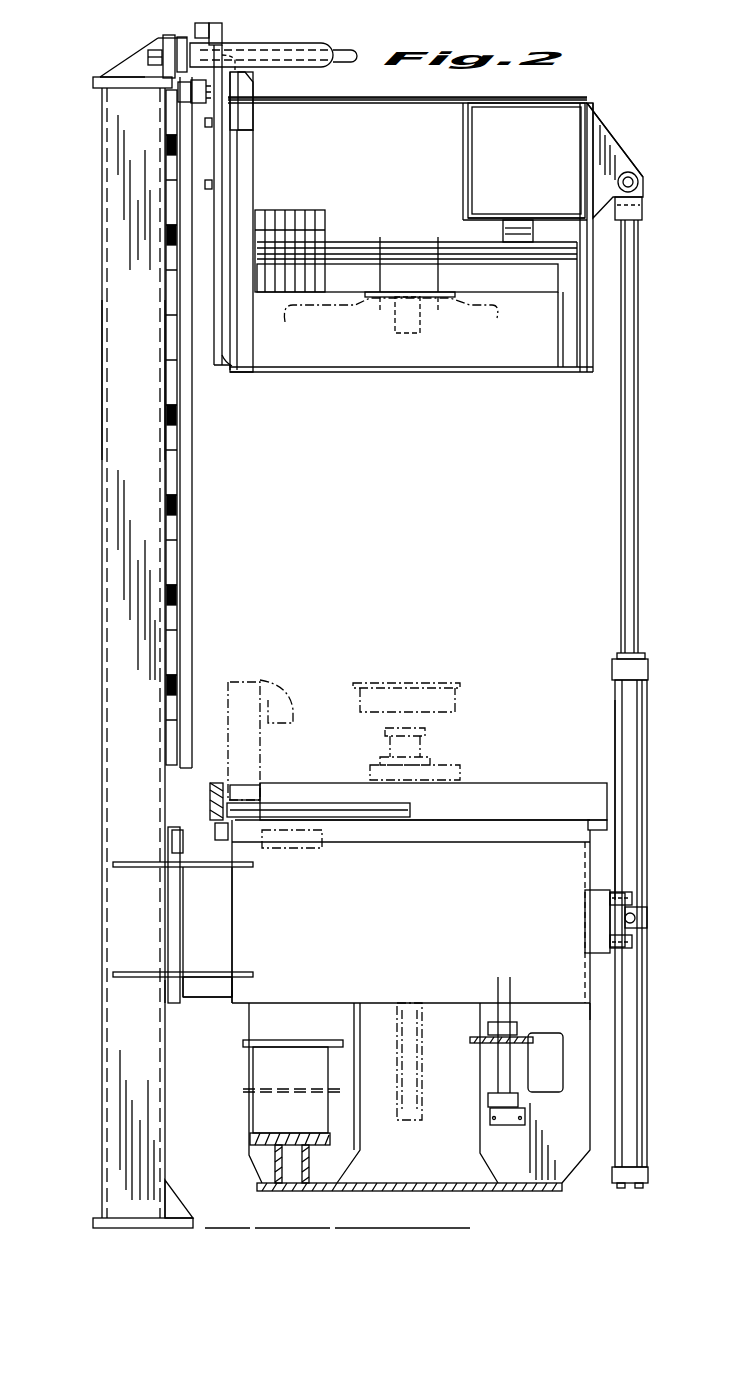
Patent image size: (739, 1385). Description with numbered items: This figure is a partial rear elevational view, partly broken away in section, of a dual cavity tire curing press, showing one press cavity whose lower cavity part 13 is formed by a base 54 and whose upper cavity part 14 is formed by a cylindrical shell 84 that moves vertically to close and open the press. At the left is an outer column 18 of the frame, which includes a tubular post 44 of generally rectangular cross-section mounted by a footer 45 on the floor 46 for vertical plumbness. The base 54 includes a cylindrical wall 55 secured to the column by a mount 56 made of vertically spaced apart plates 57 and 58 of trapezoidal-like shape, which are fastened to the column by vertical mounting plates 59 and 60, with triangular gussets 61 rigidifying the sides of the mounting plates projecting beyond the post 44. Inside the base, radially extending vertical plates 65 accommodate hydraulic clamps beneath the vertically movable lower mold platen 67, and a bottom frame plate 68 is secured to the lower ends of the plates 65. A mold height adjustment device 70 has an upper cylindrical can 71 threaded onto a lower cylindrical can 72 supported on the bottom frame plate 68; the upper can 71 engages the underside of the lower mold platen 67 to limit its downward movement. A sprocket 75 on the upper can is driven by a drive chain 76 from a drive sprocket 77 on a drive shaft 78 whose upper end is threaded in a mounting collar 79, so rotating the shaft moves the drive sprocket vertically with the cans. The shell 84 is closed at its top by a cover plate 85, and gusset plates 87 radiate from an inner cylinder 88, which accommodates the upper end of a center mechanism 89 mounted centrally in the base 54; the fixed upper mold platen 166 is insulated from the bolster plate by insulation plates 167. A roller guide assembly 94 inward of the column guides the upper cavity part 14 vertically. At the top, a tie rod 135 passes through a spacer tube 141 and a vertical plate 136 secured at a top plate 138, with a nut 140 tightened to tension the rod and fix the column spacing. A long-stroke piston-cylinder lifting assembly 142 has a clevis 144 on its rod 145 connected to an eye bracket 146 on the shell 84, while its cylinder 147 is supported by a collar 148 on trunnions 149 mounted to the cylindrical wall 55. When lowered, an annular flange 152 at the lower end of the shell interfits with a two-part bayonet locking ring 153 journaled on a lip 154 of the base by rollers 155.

The lower cavity part 13 is at (598, 858).
The upper cavity part 14 is at (483, 372).
The outer column 18 is at (100, 378).
The tubular post 44 is at (102, 497).
The footer 45 is at (100, 1216).
The floor 46 is at (245, 1225).
The base 54 is at (228, 1005).
The cylindrical wall 55 is at (590, 1015).
The mount 56 is at (155, 990).
The plate 57 is at (205, 867).
The plate 58 is at (190, 972).
The vertical mounting plate 59 is at (172, 842).
The vertical mounting plate 60 is at (183, 917).
The triangular gusset 61 is at (115, 862).
The vertical plate 65 is at (248, 1170).
The lower mold platen 67 is at (283, 848).
The bottom frame plate 68 is at (335, 1191).
The mold height adjustment device 70 is at (250, 1103).
The upper cylindrical can 71 is at (258, 1020).
The lower cylindrical can 72 is at (253, 1120).
The sprocket 75 is at (278, 1050).
The drive chain 76 is at (380, 1050).
The drive sprocket 77 is at (535, 1045).
The drive shaft 78 is at (495, 1080).
The mounting collar 79 is at (517, 1028).
The cylindrical shell 84 is at (592, 118).
The cover plate 85 is at (515, 95).
The gusset plate 87 is at (526, 160).
The inner cylinder 88 is at (463, 126).
The center mechanism 89 is at (450, 750).
The roller guide assembly 94 is at (200, 370).
The tie rod 135 is at (348, 50).
The vertical plate 136 is at (163, 45).
The top plate 138 is at (110, 75).
The nut 140 is at (138, 62).
The spacer tube 141 is at (276, 43).
The piston-cylinder lifting assembly 142 is at (612, 695).
The clevis 144 is at (642, 208).
The rod 145 is at (621, 462).
The eye bracket 146 is at (615, 145).
The cylinder 147 is at (615, 730).
The collar 148 is at (650, 915).
The trunnion 149 is at (620, 915).
The annular flange 152 is at (213, 372).
The bayonet locking ring 153 is at (210, 795).
The lip 154 is at (372, 817).
The roller 155 is at (215, 830).
The upper mold platen 166 is at (530, 290).
The insulation plate 167 is at (340, 250).